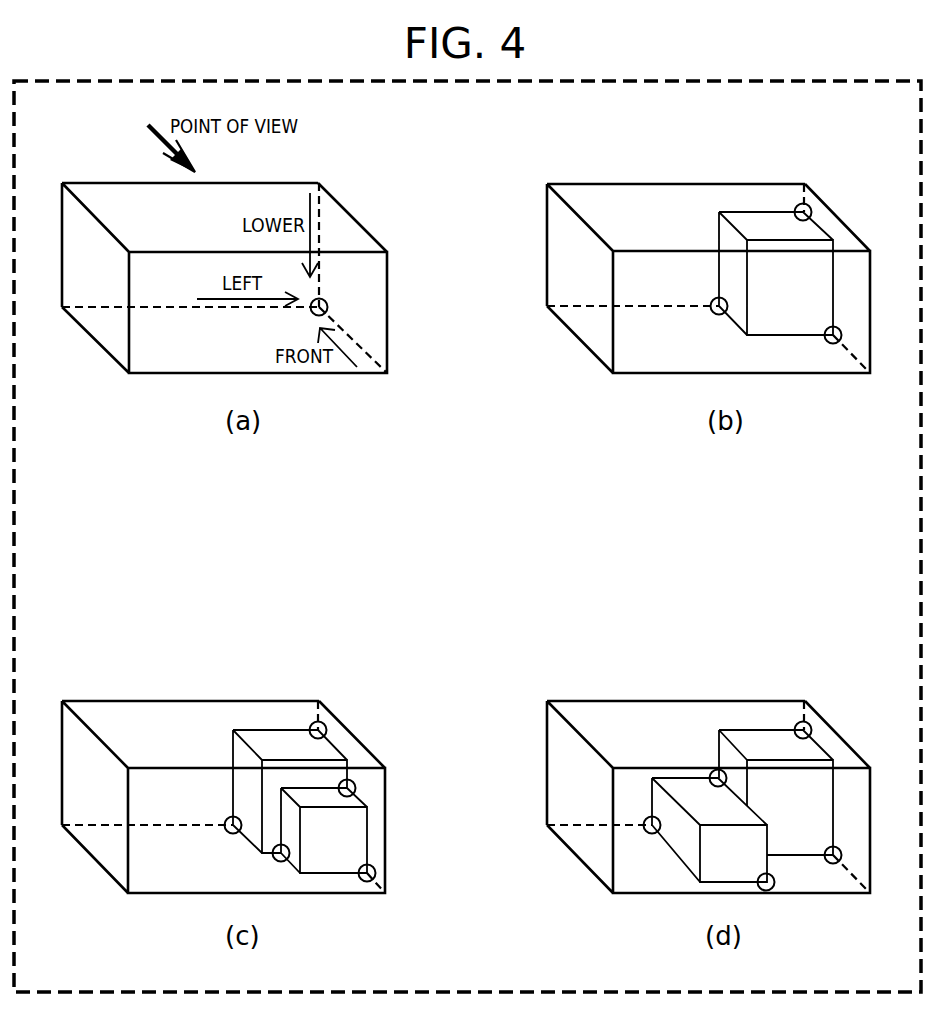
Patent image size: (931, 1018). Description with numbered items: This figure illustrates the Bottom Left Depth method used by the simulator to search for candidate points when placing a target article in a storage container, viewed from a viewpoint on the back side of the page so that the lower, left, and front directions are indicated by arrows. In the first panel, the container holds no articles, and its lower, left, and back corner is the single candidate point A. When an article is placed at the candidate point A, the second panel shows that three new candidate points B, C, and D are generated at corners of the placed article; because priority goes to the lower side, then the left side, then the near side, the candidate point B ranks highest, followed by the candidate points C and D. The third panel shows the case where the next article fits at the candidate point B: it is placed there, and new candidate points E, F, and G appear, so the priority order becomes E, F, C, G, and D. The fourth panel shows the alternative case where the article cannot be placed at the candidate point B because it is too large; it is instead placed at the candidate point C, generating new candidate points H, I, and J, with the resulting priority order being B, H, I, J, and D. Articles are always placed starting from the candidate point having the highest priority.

The candidate point A is at (332, 293).
The candidate point B is at (831, 595).
The candidate point C is at (466, 581).
The candidate point D is at (547, 462).
The candidate point E is at (356, 860).
The candidate point F is at (270, 866).
The candidate point G is at (332, 787).
The candidate point H is at (783, 878).
The candidate point I is at (647, 840).
The candidate point J is at (711, 792).